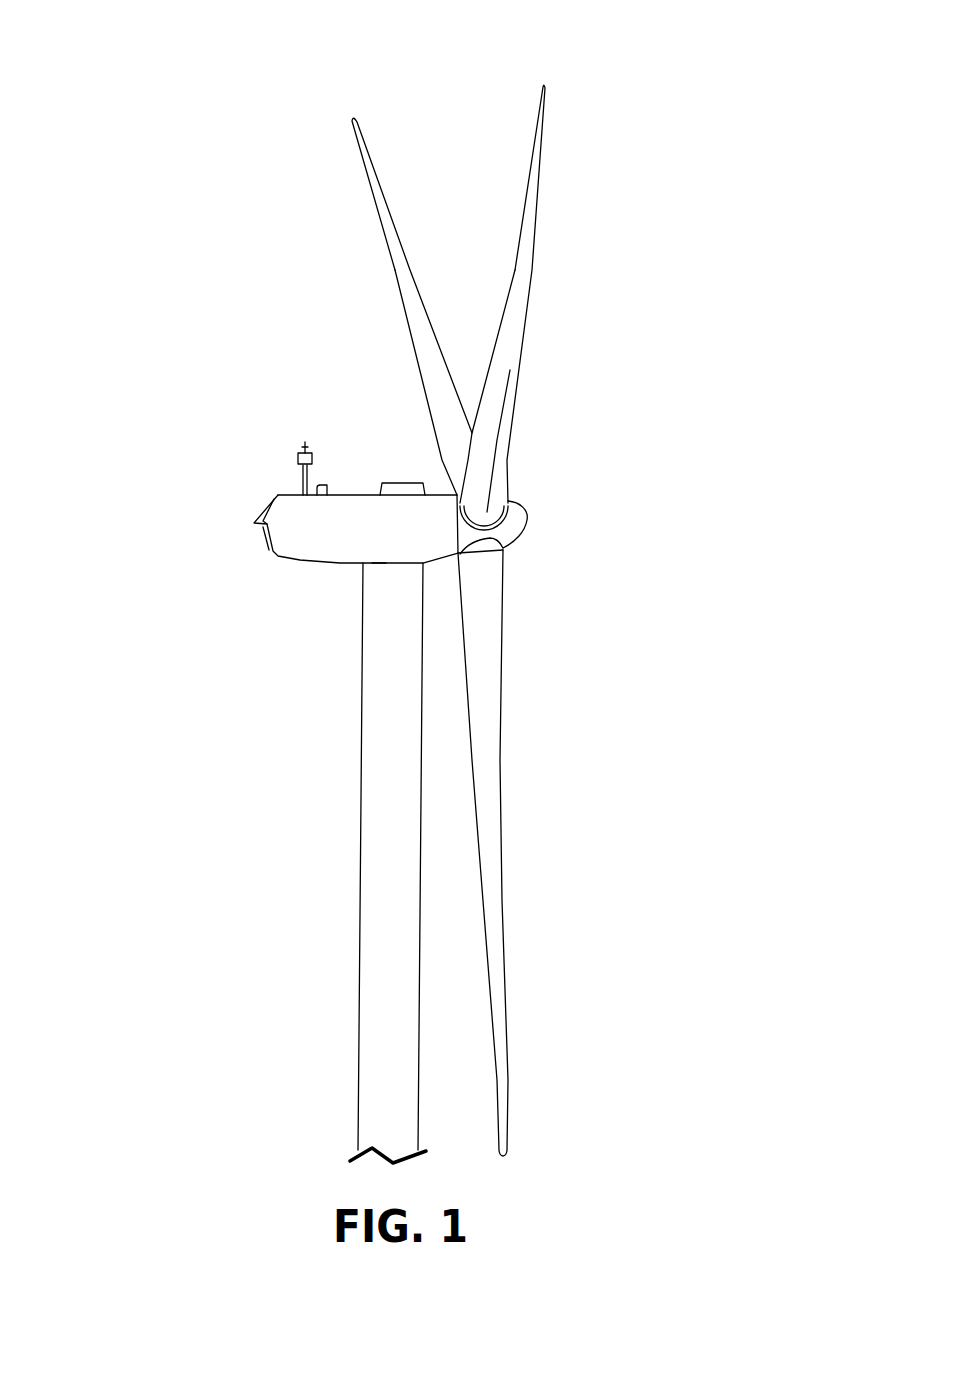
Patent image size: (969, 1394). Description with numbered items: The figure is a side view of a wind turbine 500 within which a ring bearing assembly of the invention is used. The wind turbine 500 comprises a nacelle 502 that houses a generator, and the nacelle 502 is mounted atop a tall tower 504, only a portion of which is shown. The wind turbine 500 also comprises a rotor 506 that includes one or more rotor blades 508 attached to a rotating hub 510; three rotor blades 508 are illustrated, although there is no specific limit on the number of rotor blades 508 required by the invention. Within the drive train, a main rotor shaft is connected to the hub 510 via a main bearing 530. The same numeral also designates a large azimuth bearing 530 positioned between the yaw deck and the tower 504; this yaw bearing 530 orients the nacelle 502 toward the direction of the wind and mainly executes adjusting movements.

The wind turbine 500 is at (193, 398).
The nacelle 502 is at (317, 563).
The tower 504 is at (362, 812).
The rotor 506 is at (603, 337).
The rotor blades 508 is at (387, 199).
The rotating hub 510 is at (523, 532).
The main bearing 530 is at (379, 563).